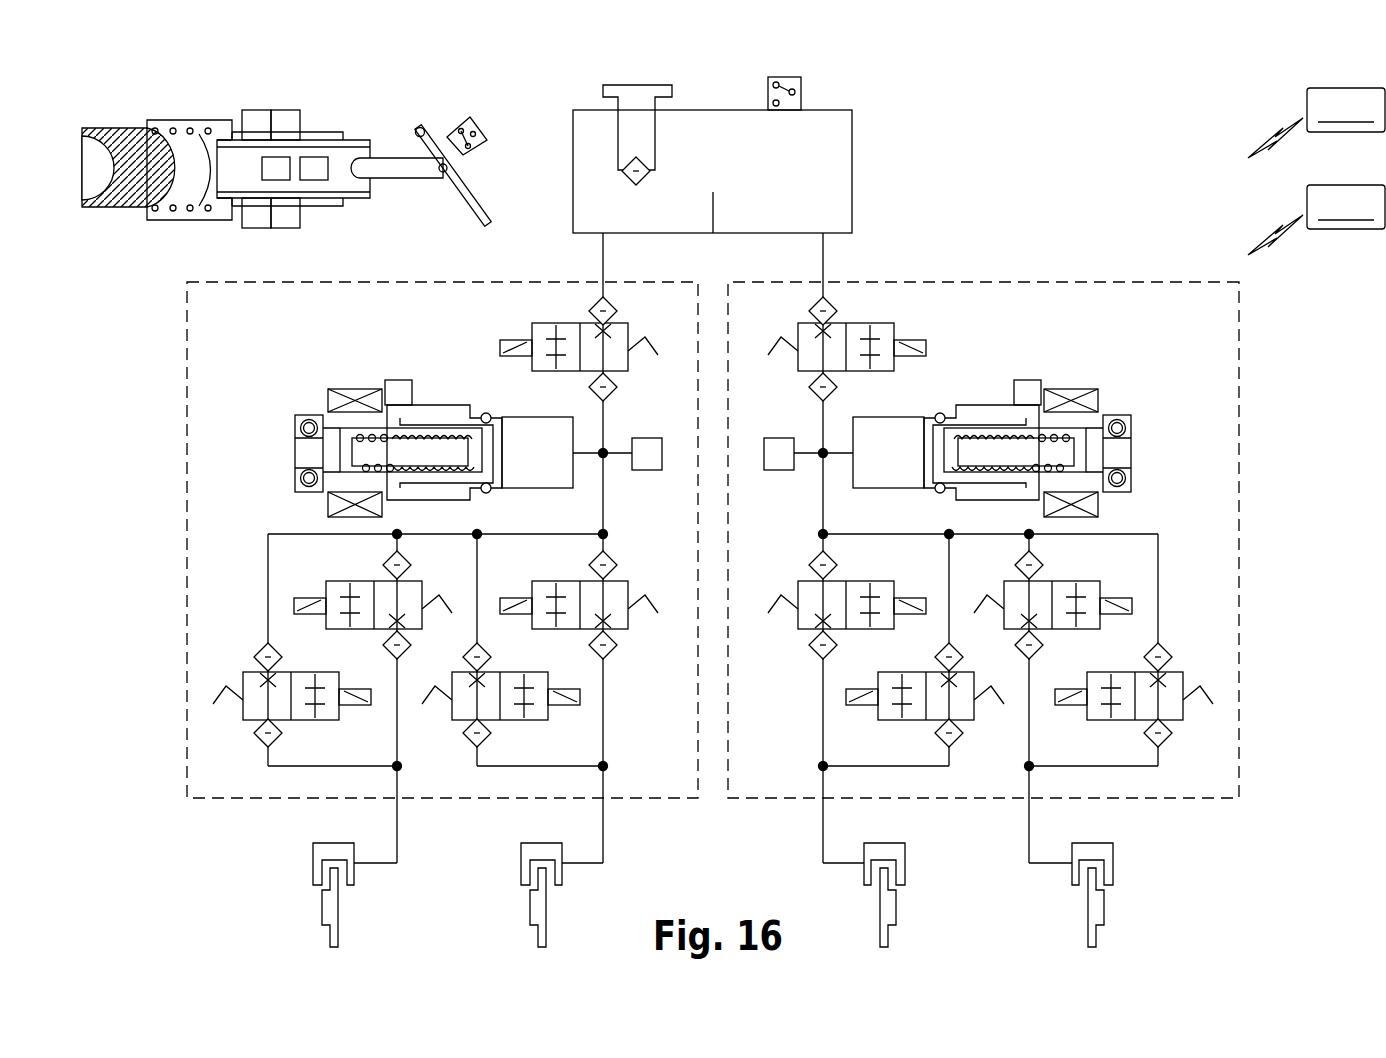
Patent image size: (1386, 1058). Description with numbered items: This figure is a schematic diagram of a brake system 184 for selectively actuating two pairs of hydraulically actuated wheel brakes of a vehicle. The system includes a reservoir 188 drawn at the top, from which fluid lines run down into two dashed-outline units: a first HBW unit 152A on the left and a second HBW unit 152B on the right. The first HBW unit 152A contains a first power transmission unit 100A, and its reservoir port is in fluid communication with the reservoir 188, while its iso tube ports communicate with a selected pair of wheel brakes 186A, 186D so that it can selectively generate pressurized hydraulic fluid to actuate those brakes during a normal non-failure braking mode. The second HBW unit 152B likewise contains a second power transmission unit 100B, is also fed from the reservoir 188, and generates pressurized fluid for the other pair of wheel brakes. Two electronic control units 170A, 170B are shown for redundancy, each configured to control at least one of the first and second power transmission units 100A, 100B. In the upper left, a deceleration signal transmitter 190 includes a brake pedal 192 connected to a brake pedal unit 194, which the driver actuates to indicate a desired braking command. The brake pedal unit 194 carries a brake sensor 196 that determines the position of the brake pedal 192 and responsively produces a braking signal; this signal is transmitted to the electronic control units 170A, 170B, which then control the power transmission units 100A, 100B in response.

The deceleration signal transmitter 190 is at (284, 140).
The brake pedal 192 is at (452, 190).
The brake pedal unit 194 is at (292, 92).
The brake sensor 196 is at (250, 108).
The reservoir 188 is at (882, 92).
The brake system 184 is at (1148, 115).
The electronic control unit 170A is at (1316, 123).
The electronic control unit 170B is at (1316, 220).
The first power transmission unit 100A is at (323, 365).
The second power transmission unit 100B is at (1123, 365).
The first HBW unit 152A is at (401, 572).
The second HBW unit 152B is at (1025, 572).
The hydraulically actuated wheel brake 186A is at (521, 858).
The hydraulically actuated wheel brake 186D is at (313, 866).